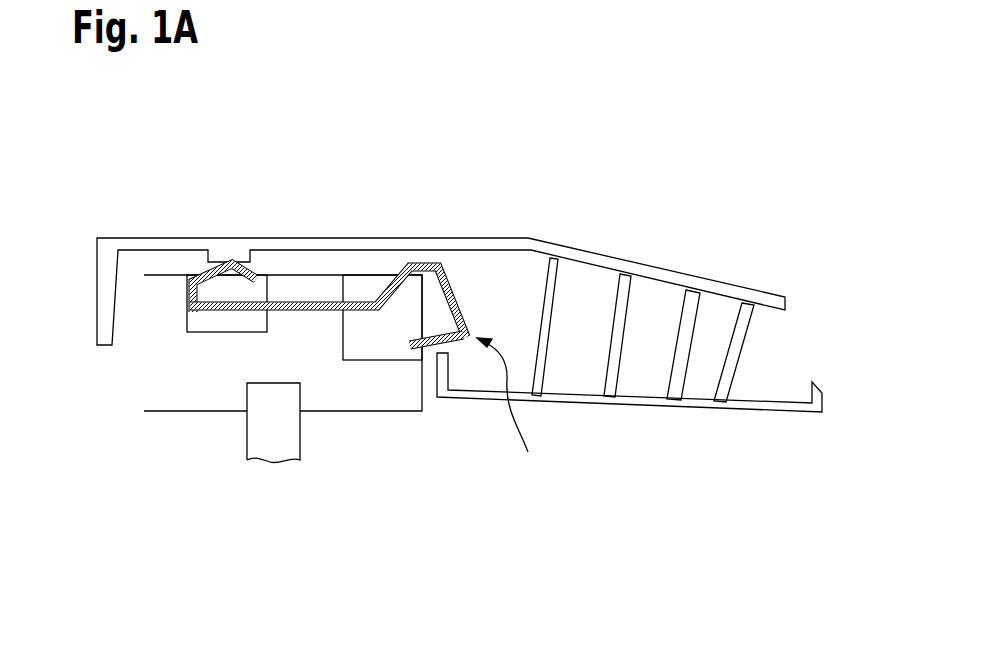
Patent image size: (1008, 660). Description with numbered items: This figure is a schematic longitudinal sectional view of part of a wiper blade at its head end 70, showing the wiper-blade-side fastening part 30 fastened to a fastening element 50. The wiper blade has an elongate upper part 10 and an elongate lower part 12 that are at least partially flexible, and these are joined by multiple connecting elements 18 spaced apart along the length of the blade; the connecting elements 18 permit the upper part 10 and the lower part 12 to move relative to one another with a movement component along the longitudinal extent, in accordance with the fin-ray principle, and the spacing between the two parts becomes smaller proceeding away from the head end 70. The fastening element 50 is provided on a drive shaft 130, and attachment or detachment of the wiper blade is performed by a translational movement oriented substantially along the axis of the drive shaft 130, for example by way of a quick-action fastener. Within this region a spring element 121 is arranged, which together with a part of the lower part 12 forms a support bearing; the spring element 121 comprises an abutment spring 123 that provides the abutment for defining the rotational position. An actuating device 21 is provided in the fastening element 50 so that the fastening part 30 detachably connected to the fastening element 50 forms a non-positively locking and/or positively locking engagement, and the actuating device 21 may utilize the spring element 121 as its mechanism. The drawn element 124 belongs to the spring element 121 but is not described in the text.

The head end 70 is at (106, 202).
The fastening part 30 is at (162, 248).
The upper part 10 is at (603, 257).
The connecting elements 18 is at (688, 307).
The lower part 12 is at (682, 407).
The fastening element 50 is at (202, 393).
The drive shaft 130 is at (290, 432).
The abutment spring 123 is at (254, 266).
The spring element 121 is at (358, 300).
The second contact section 124 is at (462, 341).
The actuating device 21 is at (512, 413).